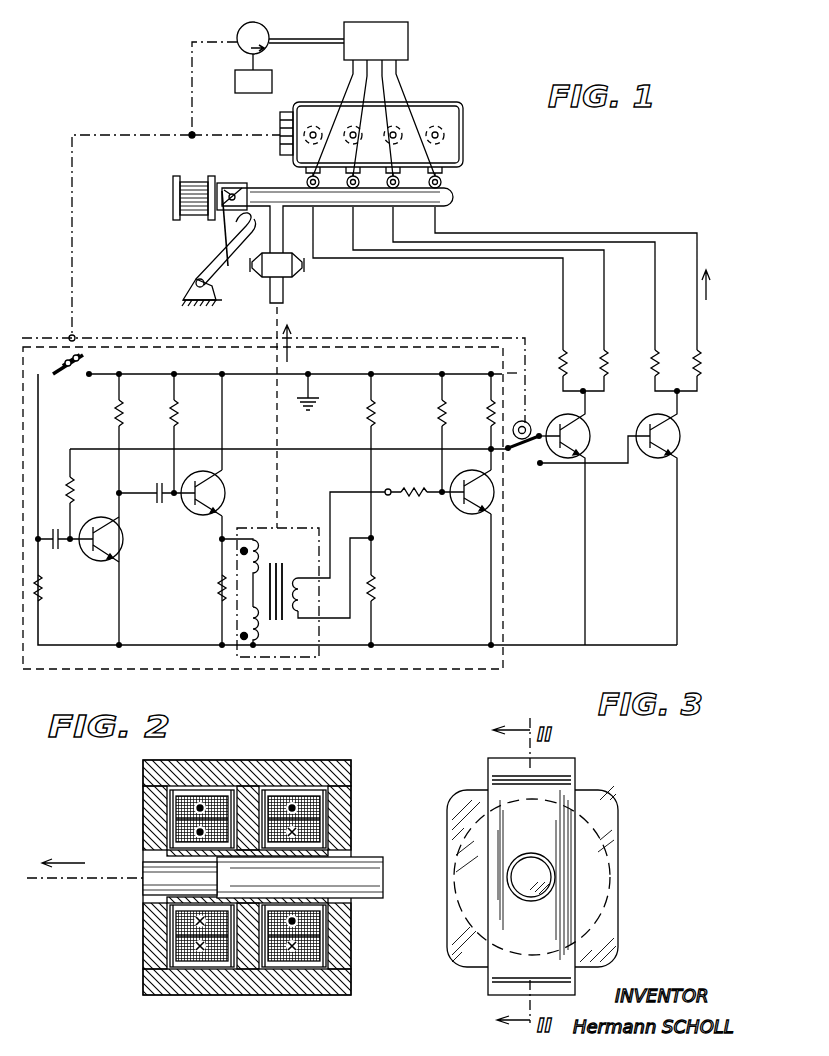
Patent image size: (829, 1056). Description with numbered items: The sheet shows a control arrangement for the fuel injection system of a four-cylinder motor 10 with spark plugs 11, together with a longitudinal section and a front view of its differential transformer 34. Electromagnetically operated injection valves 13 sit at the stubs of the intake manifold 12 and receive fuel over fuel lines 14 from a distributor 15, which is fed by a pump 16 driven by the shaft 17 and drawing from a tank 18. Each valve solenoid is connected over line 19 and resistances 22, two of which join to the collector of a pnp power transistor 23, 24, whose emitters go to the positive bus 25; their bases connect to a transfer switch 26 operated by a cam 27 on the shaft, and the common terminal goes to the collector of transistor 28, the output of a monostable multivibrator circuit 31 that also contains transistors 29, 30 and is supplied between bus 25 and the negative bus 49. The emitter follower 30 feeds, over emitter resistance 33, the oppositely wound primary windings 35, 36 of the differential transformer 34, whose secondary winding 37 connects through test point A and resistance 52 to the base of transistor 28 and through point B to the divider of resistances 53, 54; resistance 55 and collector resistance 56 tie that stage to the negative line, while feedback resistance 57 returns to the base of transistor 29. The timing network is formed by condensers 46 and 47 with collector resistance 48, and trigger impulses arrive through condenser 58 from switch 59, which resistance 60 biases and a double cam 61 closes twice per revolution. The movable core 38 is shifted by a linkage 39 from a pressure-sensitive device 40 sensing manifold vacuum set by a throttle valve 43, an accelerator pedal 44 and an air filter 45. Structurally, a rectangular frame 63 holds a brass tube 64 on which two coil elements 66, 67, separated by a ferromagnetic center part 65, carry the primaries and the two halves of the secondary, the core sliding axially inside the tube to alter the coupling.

In FIG. 1, the four-cylinder motor 10 is at (463, 119).
In FIG. 1, the spark plugs 11 is at (398, 132).
In FIG. 1, the intake manifold 12 is at (404, 206).
In FIG. 1, the injection valves 13 is at (353, 192).
In FIG. 1, the fuel lines 14 is at (347, 79).
In FIG. 1, the distributor 15 is at (408, 40).
In FIG. 1, the pump 16 is at (268, 34).
In FIG. 1, the shaft 17 is at (214, 146).
In FIG. 1, the tank 18 is at (235, 83).
In FIG. 1, the line 19 is at (505, 242).
In FIG. 1, the resistances 22 is at (690, 356).
In FIG. 1, the pnp power transistor 23 is at (592, 424).
In FIG. 1, the pnp power transistor 24 is at (682, 424).
In FIG. 1, the positive bus 25 is at (432, 645).
In FIG. 1, the transfer switch 26 is at (538, 460).
In FIG. 1, the cam 27 is at (528, 424).
In FIG. 1, the pnp transistor 28 is at (470, 514).
In FIG. 1, the transistor 29 is at (124, 553).
In FIG. 1, the transistor 30 is at (225, 486).
In FIG. 1, the monostable flip-flop multivibrator circuit 31 is at (508, 578).
In FIG. 1, the emitter resistance 33 is at (213, 590).
In FIG. 1, the differential transformer 34 is at (285, 522).
In FIG. 2, the differential transformer 34 is at (128, 791).
In FIG. 3, the differential transformer 34 is at (594, 789).
In FIG. 1, the first primary winding 35 is at (222, 556).
In FIG. 2, the first primary winding 35 is at (165, 838).
In FIG. 1, the second primary winding 36 is at (228, 624).
In FIG. 2, the second primary winding 36 is at (316, 835).
In FIG. 1, the secondary winding 37 is at (306, 594).
In FIG. 2, the secondary winding 37 is at (215, 800).
In FIG. 1, the movable core 38 is at (282, 568).
In FIG. 2, the movable core 38 is at (374, 898).
In FIG. 3, the movable core 38 is at (548, 882).
In FIG. 1, the linkage 39 is at (307, 412).
In FIG. 2, the linkage 39 is at (64, 880).
In FIG. 1, the pressure-sensitive device 40 is at (294, 278).
In FIG. 1, the throttle valve 43 is at (237, 185).
In FIG. 1, the accelerator pedal 44 is at (226, 284).
In FIG. 1, the air filter 45 is at (193, 218).
In FIG. 1, the condenser 46 is at (158, 486).
In FIG. 1, the resistance 47 is at (179, 410).
In FIG. 1, the collector resistance 48 is at (126, 410).
In FIG. 1, the negative bus 49 is at (236, 376).
In FIG. 1, the resistance 52 is at (414, 498).
In FIG. 1, the resistance 53 is at (376, 412).
In FIG. 1, the resistance 54 is at (378, 585).
In FIG. 1, the resistance 55 is at (438, 406).
In FIG. 1, the collector resistance 56 is at (487, 410).
In FIG. 1, the feedback resistance 57 is at (76, 492).
In FIG. 1, the condenser 58 is at (62, 550).
In FIG. 1, the switch 59 is at (72, 379).
In FIG. 1, the resistance 60 is at (44, 600).
In FIG. 1, the double cam 61 is at (63, 356).
In FIG. 2, the rectangular frame 63 is at (143, 982).
In FIG. 3, the rectangular frame 63 is at (488, 772).
In FIG. 2, the brass tube 64 is at (143, 893).
In FIG. 3, the brass tube 64 is at (512, 868).
In FIG. 2, the center part 65 is at (248, 965).
In FIG. 2, the coil element 66 is at (205, 963).
In FIG. 3, the coil element 66 is at (453, 947).
In FIG. 2, the coil element 67 is at (305, 963).